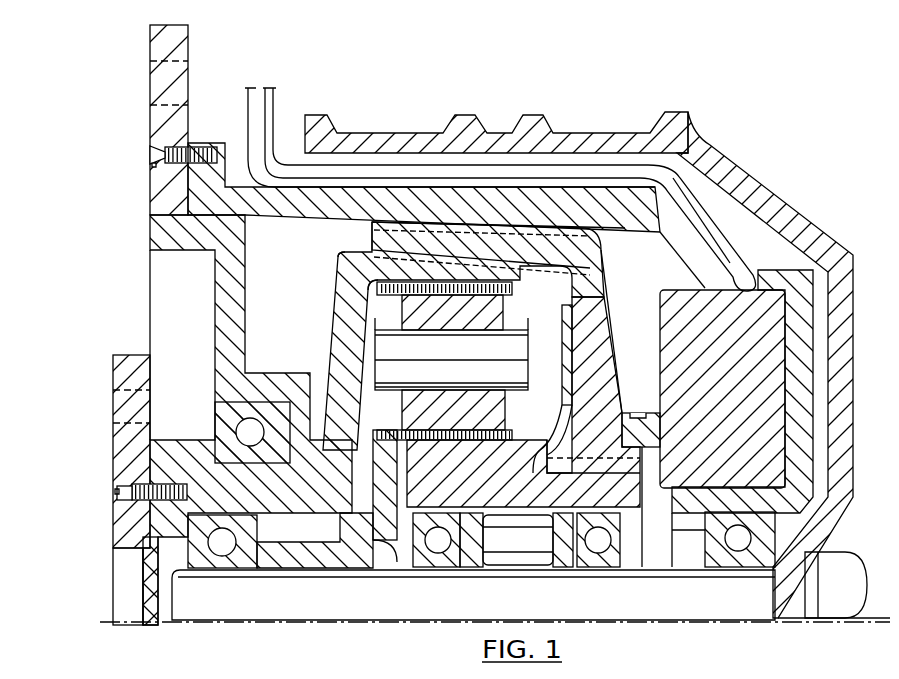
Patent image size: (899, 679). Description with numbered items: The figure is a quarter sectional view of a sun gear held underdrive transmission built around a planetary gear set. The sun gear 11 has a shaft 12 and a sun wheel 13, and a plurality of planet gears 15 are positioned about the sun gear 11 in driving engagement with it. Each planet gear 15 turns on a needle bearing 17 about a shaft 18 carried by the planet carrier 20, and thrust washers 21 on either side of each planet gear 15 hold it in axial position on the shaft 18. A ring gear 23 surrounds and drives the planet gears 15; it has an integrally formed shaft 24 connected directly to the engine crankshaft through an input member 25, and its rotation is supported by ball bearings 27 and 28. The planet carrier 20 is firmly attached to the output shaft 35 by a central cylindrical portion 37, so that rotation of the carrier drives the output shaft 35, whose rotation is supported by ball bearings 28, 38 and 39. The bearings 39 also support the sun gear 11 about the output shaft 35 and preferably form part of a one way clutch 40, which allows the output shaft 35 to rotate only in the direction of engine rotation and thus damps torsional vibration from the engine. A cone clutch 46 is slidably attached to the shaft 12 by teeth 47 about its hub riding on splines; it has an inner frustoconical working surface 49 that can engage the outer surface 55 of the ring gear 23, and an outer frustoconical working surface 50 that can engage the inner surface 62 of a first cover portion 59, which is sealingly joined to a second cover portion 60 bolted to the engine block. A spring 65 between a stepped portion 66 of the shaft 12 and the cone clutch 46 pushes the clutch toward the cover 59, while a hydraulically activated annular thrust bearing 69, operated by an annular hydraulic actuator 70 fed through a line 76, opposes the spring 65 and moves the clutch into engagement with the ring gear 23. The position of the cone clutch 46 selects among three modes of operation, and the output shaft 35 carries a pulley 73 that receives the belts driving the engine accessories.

The second cover portion 60 is at (168, 132).
The line 76 is at (262, 110).
The pulley 73 is at (605, 140).
The first cover portion 59 is at (722, 164).
The outer surface of the ring gear 55 is at (405, 250).
The outer frustoconical working surface 50 is at (425, 233).
The inner surface of the cover 62 is at (603, 248).
The inner frustoconical working surface 49 is at (368, 278).
The thrust washer 21 is at (370, 297).
The needle bearing 17 is at (505, 312).
The shaft 18 is at (512, 348).
The cone clutch 46 is at (603, 330).
The annular thrust bearing 69 is at (632, 413).
The annular hydraulic actuator 70 is at (757, 438).
The spring 65 is at (538, 405).
The stepped portion 66 is at (535, 450).
The planet gear 15 is at (459, 412).
The teeth 47 is at (640, 470).
The sun wheel 13 is at (422, 497).
The planet carrier 20 is at (380, 500).
The ring gear 23 is at (318, 490).
The ball bearing 27 is at (215, 403).
The ball bearing 28 is at (240, 558).
The central cylindrical portion 37 is at (283, 553).
The ball bearing 39 is at (443, 562).
The sun gear 11 is at (486, 500).
The one way clutch assembly 40 is at (522, 542).
The shaft 12 is at (563, 560).
The ball bearing 38 is at (757, 556).
The output shaft 35 is at (253, 603).
The input member 25 is at (125, 446).
The shaft 24 is at (122, 511).